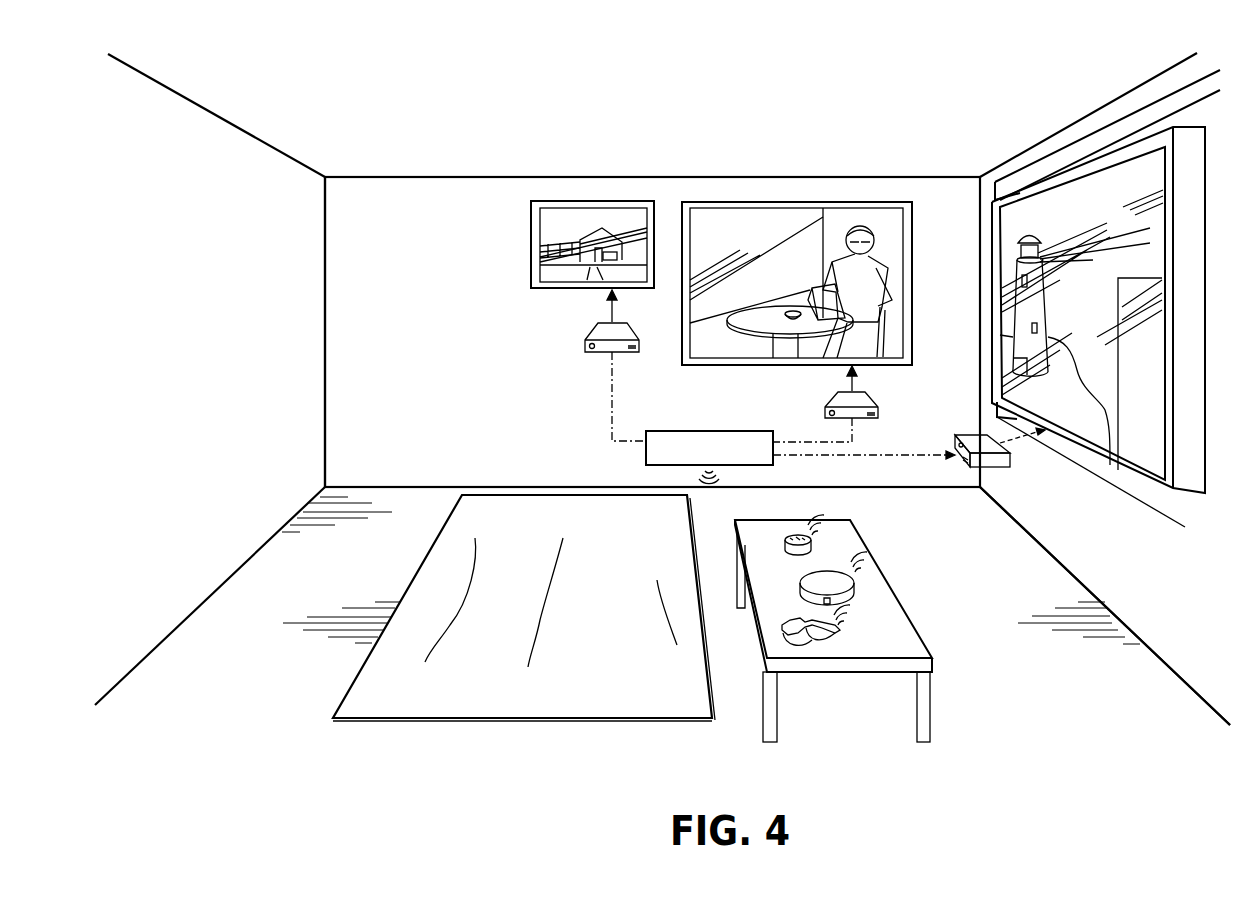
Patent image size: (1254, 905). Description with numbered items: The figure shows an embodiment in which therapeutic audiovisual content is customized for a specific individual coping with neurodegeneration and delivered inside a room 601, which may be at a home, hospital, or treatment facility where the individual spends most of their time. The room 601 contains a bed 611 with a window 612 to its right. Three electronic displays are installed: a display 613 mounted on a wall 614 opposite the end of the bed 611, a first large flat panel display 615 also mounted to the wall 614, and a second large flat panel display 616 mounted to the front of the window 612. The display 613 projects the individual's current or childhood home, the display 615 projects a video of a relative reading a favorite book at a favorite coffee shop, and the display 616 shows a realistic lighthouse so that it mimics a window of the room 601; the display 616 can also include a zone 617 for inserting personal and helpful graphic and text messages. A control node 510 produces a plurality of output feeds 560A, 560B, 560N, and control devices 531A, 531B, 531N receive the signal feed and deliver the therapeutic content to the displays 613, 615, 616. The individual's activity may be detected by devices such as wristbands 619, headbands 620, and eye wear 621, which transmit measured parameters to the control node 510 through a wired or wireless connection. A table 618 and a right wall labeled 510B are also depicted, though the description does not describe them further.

The room 601 is at (309, 104).
The wall 614 is at (417, 195).
The display 613 is at (592, 228).
The first large flat panel display 615 is at (730, 222).
The window 612 is at (1063, 160).
The second large flat panel display 616 is at (1118, 247).
The zone 617 is at (1150, 440).
The bed 611 is at (487, 505).
The table 618 is at (925, 643).
The wristband 619 is at (798, 530).
The headband 620 is at (852, 588).
The eye wear 621 is at (823, 640).
The control node 510 is at (690, 431).
The right wall 510B is at (1105, 606).
The control device 531A is at (585, 345).
The control device 531B is at (877, 402).
The control device 531N is at (988, 465).
The output feed 560A is at (612, 395).
The output feed 560B is at (852, 430).
The output feed 560N is at (940, 458).